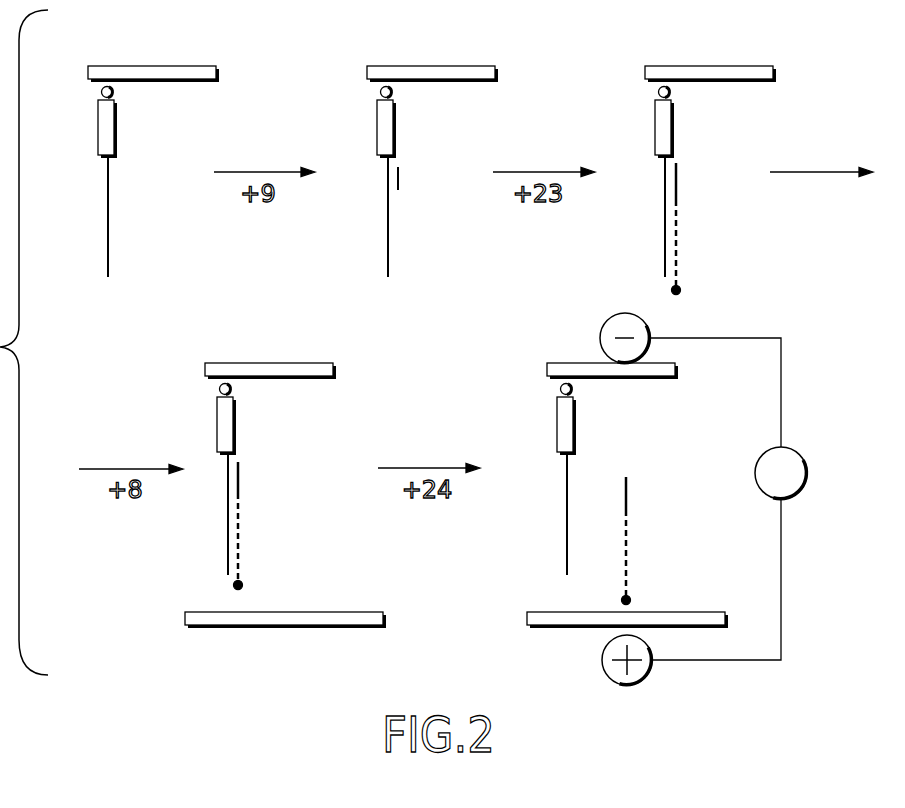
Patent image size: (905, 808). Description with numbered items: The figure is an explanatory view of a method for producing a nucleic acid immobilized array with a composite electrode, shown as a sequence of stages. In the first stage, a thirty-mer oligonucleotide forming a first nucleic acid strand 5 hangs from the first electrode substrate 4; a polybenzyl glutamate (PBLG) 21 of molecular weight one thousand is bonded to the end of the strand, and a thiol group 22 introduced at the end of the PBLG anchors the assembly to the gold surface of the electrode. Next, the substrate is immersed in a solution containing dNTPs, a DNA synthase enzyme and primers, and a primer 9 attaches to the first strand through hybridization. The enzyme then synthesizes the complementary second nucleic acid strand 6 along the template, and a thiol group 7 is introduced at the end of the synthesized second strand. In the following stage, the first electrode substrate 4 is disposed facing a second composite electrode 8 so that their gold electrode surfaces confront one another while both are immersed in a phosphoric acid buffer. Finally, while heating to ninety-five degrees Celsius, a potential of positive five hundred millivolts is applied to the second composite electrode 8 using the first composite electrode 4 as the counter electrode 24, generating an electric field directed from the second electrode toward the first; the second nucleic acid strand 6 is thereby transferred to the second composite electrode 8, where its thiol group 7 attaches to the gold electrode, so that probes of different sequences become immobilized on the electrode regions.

The first electrode substrate 4 is at (188, 68).
The thiol group 22 is at (100, 92).
The polybenzyl glutamate (PBLG) 21 is at (98, 131).
The first nucleic acid strand 5 is at (108, 200).
The primer 9 is at (400, 180).
The second nucleic acid strand 6 is at (678, 228).
The thiol group 7 is at (681, 292).
The second composite electrode 8 is at (340, 615).
The counter electrode (potential application) 24 is at (806, 471).